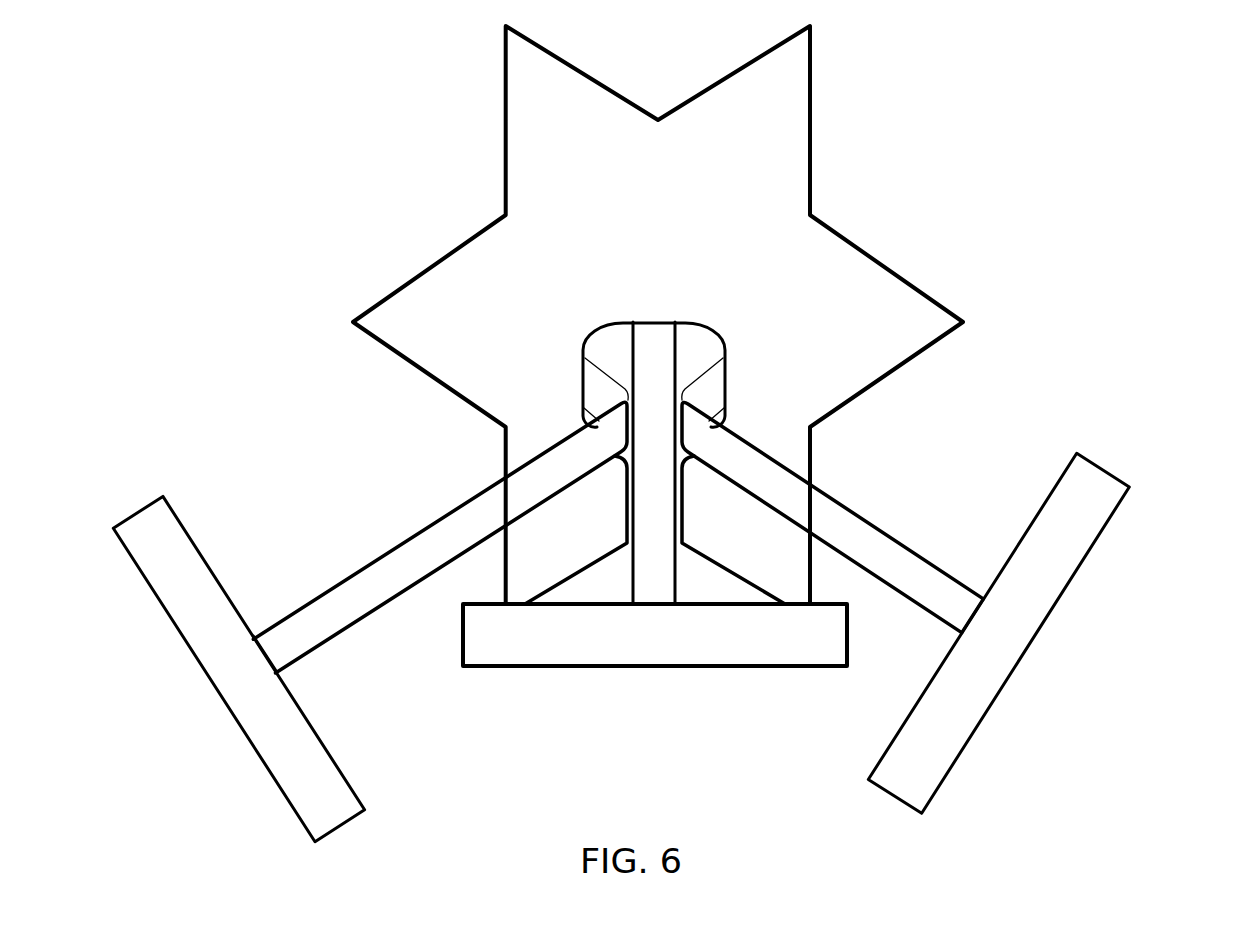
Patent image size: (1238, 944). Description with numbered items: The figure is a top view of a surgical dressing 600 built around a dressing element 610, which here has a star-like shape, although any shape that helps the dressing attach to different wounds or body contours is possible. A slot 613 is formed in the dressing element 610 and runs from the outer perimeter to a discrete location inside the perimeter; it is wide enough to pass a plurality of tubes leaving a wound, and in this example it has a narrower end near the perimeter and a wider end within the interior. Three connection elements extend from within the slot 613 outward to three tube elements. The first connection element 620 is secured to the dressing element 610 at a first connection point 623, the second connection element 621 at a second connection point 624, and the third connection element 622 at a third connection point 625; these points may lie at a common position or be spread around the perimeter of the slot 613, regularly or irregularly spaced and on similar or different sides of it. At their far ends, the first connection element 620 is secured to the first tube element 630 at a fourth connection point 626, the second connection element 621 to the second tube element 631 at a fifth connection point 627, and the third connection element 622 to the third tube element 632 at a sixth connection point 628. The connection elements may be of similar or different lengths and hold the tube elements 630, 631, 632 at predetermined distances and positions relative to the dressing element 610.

The surgical dressing 600 is at (437, 127).
The dressing element 610 is at (535, 225).
The slot 613 is at (615, 353).
The first connection element 620 is at (867, 550).
The second connection element 621 is at (652, 567).
The third connection element 622 is at (427, 543).
The first connection point 623 is at (733, 382).
The second connection point 624 is at (650, 320).
The third connection point 625 is at (578, 383).
The fourth connection point 626 is at (968, 617).
The fifth connection point 627 is at (657, 600).
The sixth connection point 628 is at (277, 668).
The first tube element 630 is at (1025, 575).
The second tube element 631 is at (503, 636).
The third tube element 632 is at (307, 787).